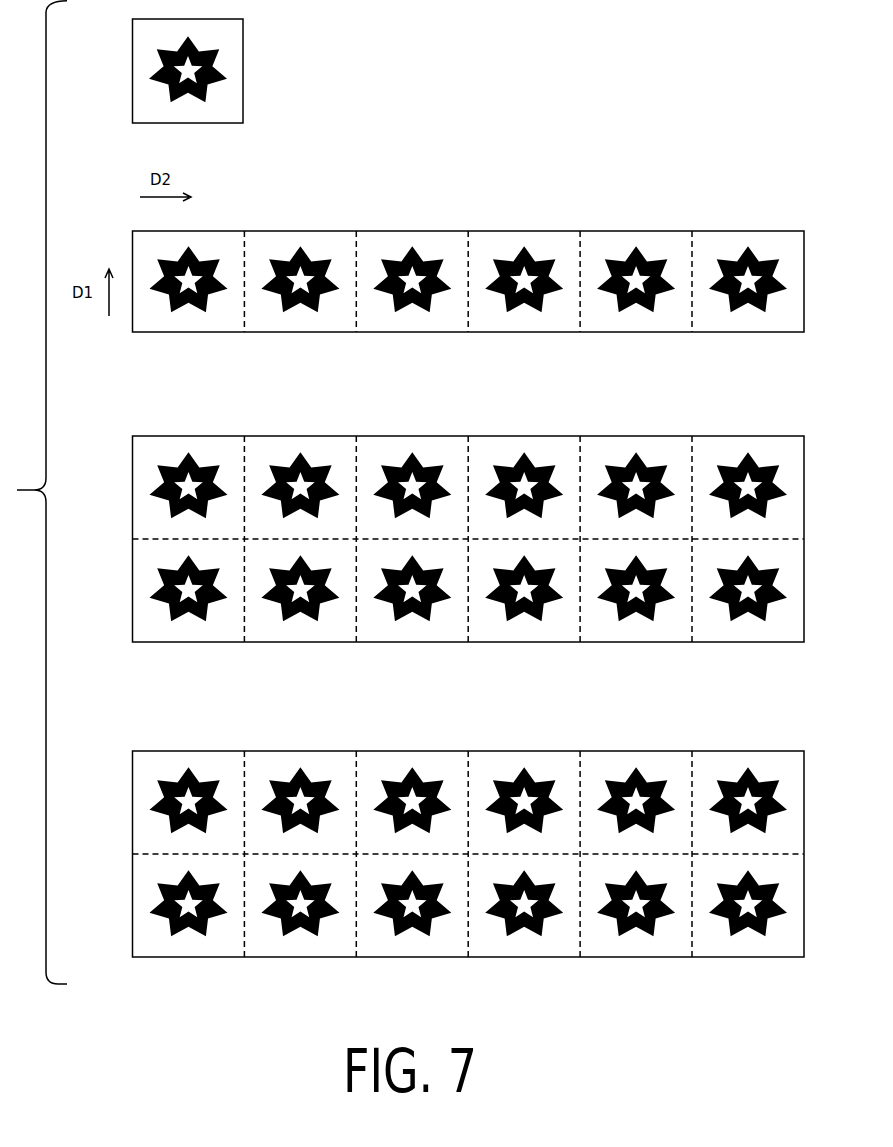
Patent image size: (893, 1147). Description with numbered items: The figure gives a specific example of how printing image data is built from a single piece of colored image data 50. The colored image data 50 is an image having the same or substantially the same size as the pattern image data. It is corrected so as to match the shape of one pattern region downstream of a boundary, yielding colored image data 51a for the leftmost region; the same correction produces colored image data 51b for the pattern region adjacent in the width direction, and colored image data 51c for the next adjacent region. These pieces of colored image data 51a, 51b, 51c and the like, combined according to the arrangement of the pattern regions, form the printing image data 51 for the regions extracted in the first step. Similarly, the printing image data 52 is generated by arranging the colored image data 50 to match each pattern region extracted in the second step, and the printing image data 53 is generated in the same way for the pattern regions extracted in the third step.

The colored image data 50 is at (243, 78).
The printing image data 51 is at (469, 263).
The colored image data 51a is at (208, 243).
The colored image data 51b is at (325, 243).
The colored image data 51c is at (443, 242).
The printing image data 52 is at (713, 435).
The printing image data 53 is at (712, 750).